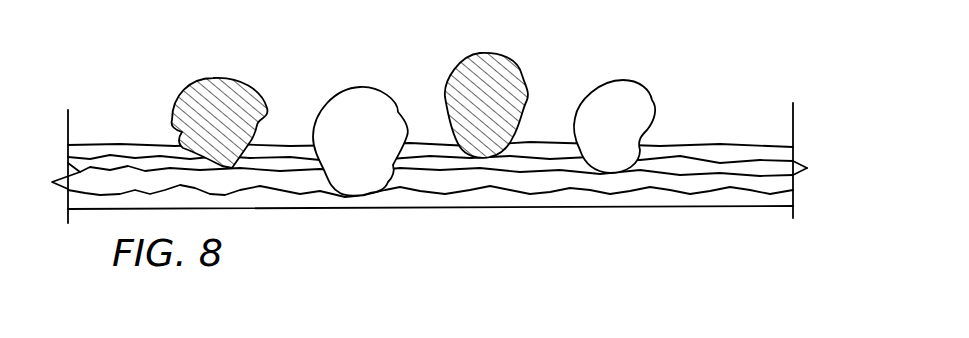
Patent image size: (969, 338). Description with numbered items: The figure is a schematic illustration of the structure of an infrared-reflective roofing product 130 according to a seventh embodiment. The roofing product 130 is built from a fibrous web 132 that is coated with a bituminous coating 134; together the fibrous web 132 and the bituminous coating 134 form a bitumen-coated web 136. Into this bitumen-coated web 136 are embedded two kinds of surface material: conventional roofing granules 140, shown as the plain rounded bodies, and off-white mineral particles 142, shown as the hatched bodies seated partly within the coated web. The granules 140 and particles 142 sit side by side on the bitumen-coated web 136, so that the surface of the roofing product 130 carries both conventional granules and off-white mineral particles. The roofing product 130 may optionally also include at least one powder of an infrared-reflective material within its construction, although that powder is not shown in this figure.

The infrared-reflective roofing product 130 is at (703, 50).
The fibrous web 132 is at (785, 180).
The bituminous coating 134 is at (572, 197).
The bitumen-coated web 136 is at (697, 207).
The conventional roofing granules 140 is at (375, 140).
The off-white mineral particles 142 is at (238, 120).